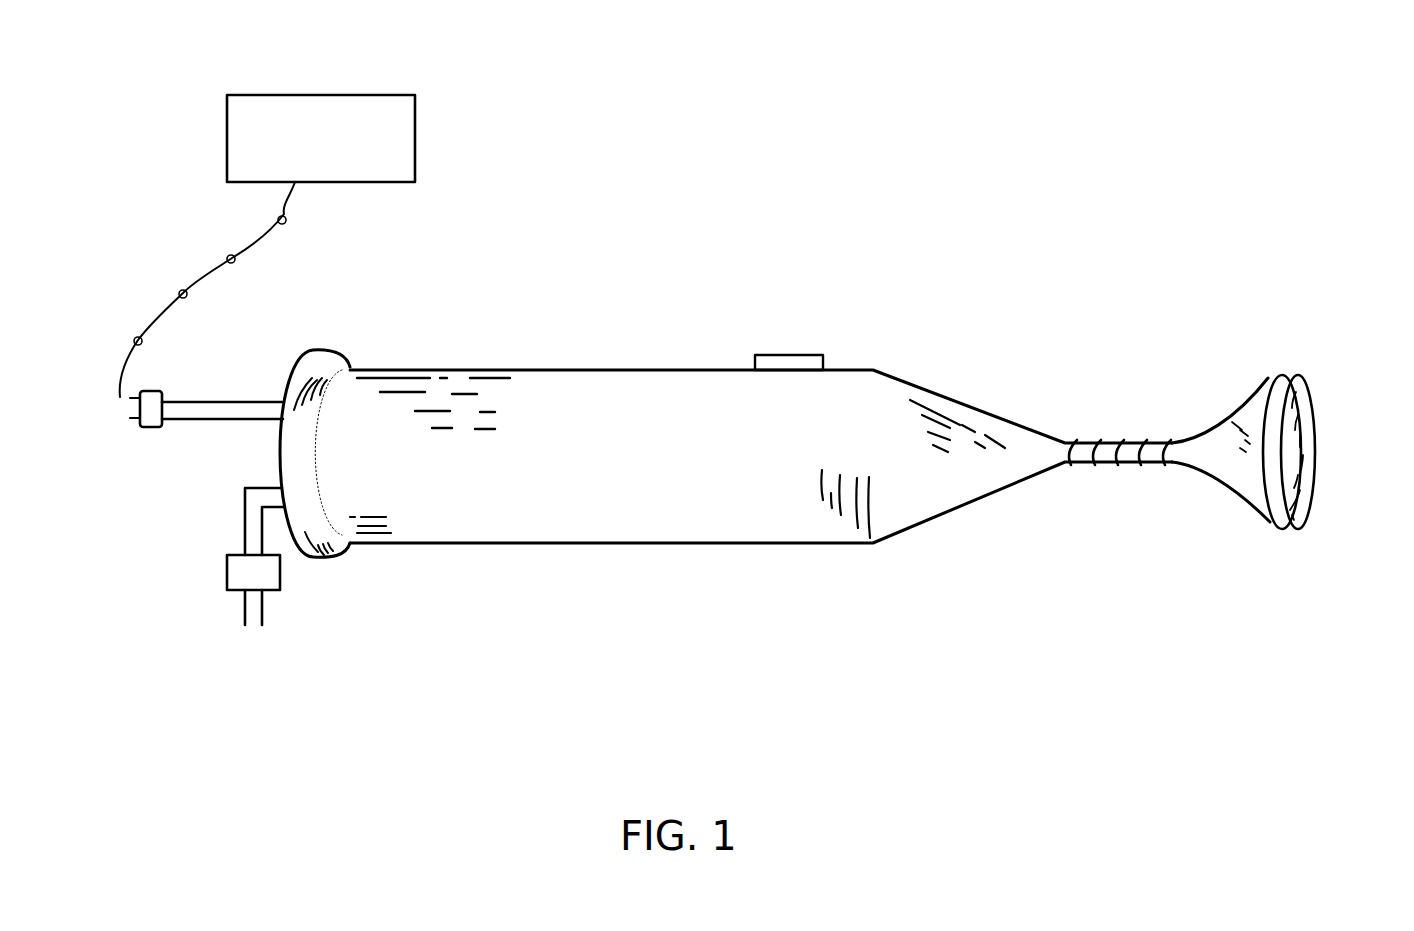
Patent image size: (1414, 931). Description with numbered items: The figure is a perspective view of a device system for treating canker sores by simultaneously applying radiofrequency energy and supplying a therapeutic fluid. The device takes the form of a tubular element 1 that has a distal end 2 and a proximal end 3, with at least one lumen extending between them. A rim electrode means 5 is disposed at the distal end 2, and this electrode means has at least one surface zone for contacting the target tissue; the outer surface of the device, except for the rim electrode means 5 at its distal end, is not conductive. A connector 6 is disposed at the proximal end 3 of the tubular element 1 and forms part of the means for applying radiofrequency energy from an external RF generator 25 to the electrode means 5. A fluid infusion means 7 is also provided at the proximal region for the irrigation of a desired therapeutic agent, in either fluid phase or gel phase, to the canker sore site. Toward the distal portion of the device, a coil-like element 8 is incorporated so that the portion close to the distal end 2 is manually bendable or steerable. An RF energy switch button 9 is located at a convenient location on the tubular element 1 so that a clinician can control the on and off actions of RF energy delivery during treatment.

The tubular element 1 is at (514, 369).
The distal end 2 is at (1302, 378).
The proximal end 3 is at (340, 312).
The rim electrode means 5 is at (1286, 535).
The connector 6 is at (161, 385).
The fluid infusion means 7 is at (240, 620).
The coil-like element 8 is at (1120, 440).
The RF energy switch button 9 is at (818, 347).
The external RF generator 25 is at (398, 107).